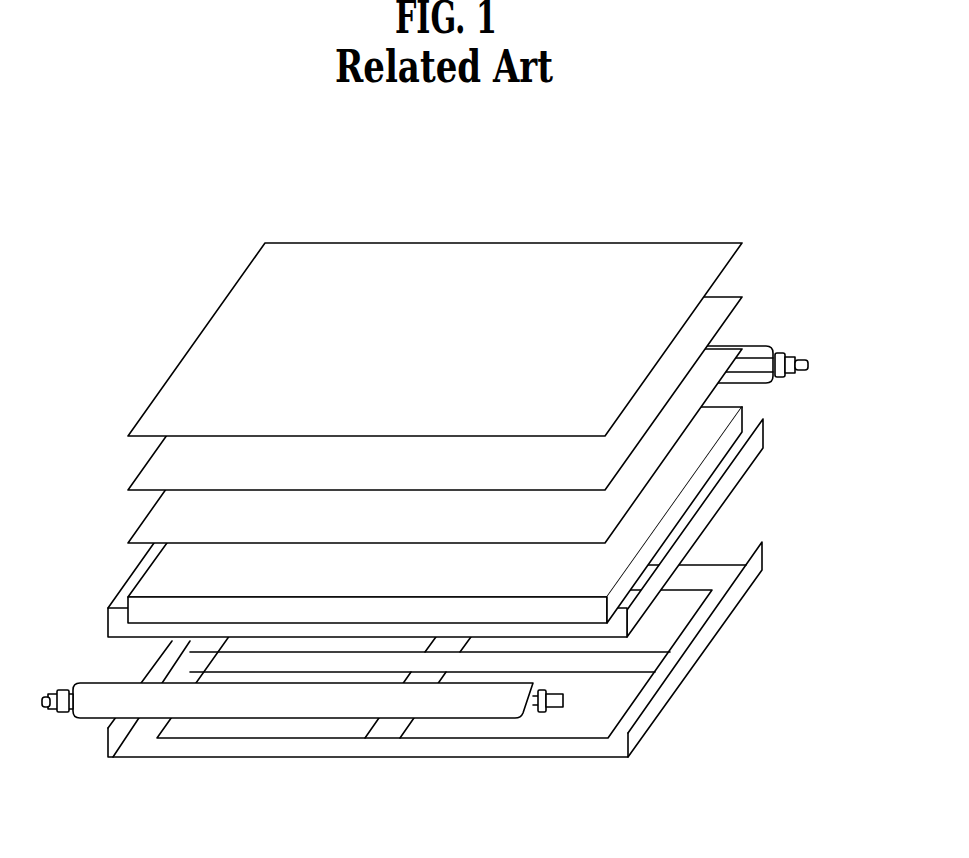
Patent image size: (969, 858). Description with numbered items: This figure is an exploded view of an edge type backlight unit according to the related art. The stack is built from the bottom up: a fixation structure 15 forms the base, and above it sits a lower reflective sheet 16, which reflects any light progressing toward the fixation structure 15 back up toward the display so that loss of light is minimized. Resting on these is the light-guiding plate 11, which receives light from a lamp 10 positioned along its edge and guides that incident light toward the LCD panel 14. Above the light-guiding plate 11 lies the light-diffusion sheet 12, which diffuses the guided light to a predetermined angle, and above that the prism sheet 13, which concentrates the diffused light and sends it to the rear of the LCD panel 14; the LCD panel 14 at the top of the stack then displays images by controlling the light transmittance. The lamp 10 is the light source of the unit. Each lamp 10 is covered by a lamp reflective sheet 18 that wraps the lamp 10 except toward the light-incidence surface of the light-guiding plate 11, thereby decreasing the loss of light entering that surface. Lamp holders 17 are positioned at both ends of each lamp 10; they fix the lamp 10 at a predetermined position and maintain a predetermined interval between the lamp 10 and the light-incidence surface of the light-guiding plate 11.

The lamp 10 is at (808, 366).
The light-guiding plate 11 is at (152, 573).
The light-diffusion sheet 12 is at (152, 520).
The prism sheet 13 is at (152, 466).
The LCD panel 14 is at (152, 412).
The fixation structure 15 is at (112, 738).
The lower reflective sheet 16 is at (112, 618).
The lamp holder 17 is at (786, 354).
The lamp reflective sheet 18 is at (753, 347).